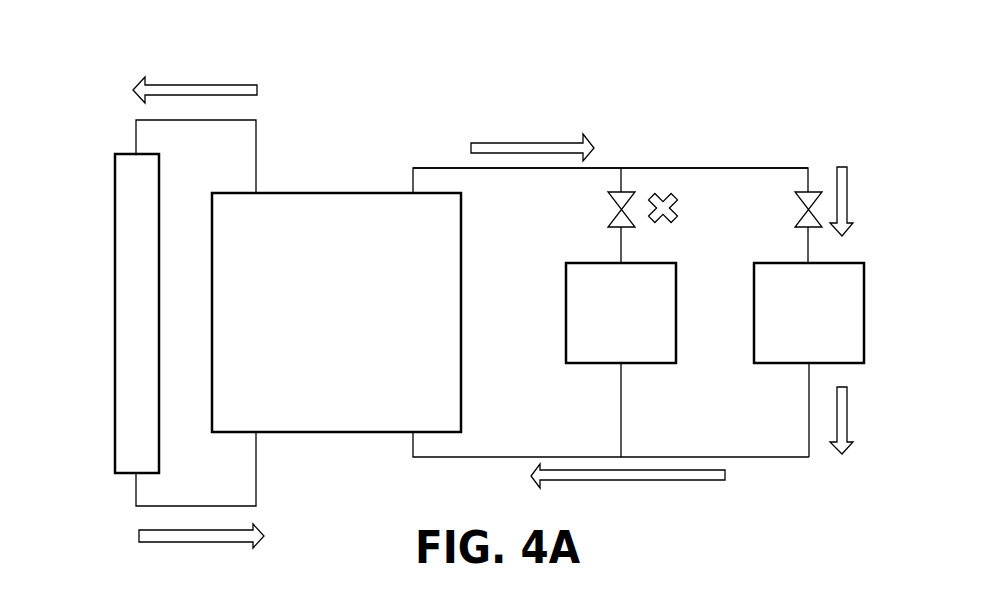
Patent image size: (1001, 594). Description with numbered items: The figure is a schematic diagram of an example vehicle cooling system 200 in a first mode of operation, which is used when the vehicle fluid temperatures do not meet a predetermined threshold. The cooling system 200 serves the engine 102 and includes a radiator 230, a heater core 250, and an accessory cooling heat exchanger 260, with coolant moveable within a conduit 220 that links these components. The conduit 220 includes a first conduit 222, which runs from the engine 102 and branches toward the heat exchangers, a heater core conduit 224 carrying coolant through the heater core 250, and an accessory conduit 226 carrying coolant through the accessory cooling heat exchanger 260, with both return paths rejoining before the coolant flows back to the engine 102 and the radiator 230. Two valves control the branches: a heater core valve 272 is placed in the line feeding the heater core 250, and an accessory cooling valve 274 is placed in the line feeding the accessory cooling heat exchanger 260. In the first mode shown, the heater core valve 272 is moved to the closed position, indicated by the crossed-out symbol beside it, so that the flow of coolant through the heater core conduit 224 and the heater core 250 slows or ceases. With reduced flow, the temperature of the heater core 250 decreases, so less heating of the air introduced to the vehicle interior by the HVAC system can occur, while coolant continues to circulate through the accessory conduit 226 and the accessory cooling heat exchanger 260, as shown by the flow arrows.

The cooling system 200 is at (853, 89).
The engine 102 is at (293, 193).
The radiator 230 is at (115, 195).
The conduit 220 is at (645, 168).
The first conduit 222 is at (705, 168).
The heater core conduit 224 is at (621, 407).
The accessory conduit 226 is at (809, 403).
The heater core 250 is at (566, 318).
The accessory cooling heat exchanger 260 is at (864, 293).
The heater core valve 272 is at (608, 205).
The accessory cooling valve 274 is at (795, 207).